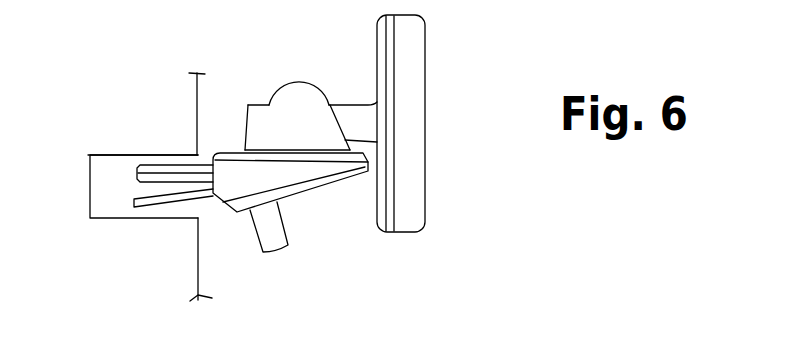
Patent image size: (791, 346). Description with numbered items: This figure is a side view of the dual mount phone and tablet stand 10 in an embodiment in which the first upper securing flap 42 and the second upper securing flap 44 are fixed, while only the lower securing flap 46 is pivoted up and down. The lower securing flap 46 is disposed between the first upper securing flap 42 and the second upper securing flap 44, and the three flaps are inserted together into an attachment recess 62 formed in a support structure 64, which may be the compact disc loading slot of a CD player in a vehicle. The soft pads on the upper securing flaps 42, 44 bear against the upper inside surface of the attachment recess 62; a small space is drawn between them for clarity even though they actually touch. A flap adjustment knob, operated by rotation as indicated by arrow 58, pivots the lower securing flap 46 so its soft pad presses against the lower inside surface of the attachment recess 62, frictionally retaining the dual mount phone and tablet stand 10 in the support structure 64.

The dual mount phone and tablet stand 10 is at (460, 64).
The first upper securing flap 42 is at (162, 155).
The second upper securing flap 44 is at (175, 173).
The lower securing flap 46 is at (168, 207).
The arrow 58 is at (289, 239).
The attachment recess 62 is at (110, 220).
The support structure 64 is at (200, 277).